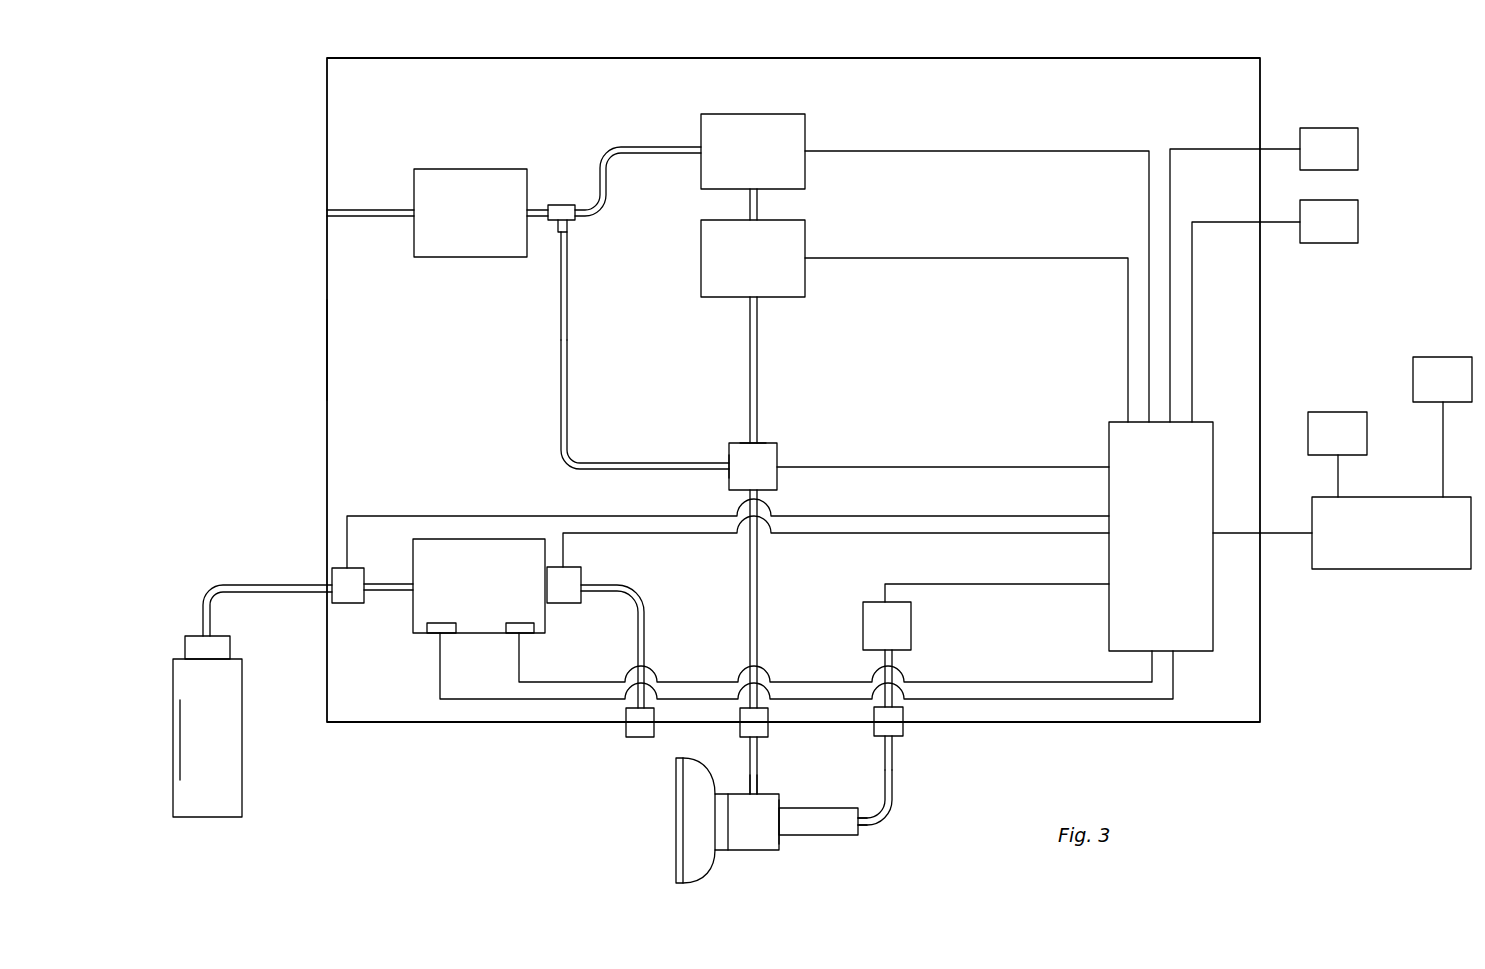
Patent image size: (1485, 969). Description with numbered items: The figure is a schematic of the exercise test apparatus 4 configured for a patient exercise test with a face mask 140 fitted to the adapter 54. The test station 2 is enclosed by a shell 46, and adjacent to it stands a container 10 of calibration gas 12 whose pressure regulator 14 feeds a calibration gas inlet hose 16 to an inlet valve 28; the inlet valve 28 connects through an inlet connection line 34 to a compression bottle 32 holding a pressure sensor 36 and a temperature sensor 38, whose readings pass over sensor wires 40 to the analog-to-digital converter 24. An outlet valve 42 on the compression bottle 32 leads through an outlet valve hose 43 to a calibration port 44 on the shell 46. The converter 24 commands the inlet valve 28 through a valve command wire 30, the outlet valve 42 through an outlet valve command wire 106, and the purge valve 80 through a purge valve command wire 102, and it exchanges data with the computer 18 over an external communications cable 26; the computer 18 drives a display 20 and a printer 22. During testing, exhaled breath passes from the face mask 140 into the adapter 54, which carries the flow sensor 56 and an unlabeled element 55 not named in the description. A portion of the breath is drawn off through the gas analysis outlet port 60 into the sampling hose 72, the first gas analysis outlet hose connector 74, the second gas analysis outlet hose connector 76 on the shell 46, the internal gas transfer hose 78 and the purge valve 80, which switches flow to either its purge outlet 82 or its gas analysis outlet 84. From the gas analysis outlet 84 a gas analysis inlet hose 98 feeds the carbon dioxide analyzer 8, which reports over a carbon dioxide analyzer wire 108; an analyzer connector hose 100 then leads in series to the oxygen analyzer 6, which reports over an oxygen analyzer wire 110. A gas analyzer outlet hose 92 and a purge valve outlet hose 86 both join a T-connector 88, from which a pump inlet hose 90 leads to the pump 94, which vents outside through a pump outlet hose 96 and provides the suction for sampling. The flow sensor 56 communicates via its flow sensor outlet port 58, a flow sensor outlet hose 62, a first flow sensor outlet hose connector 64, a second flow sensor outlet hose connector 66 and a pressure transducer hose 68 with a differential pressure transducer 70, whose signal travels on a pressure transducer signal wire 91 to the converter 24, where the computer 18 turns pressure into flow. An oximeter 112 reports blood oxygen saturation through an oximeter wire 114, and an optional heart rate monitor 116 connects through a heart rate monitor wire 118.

The test station 2 is at (493, 54).
The exercise test apparatus 4 is at (298, 121).
The oxygen analyzer 6 is at (805, 118).
The carbon dioxide analyzer 8 is at (805, 220).
The container 10 is at (242, 802).
The calibration gas 12 is at (219, 762).
The pressure regulator 14 is at (196, 636).
The calibration gas inlet hose 16 is at (278, 585).
The computer 18 is at (1405, 569).
The display 20 is at (1443, 357).
The printer 22 is at (1330, 412).
The analog-to-digital converter 24 is at (1108, 620).
The external communications cable 26 is at (1283, 533).
The inlet valve 28 is at (348, 603).
The valve command wire 30 is at (394, 515).
The compression bottle 32 is at (422, 634).
The inlet connection line 34 is at (388, 594).
The pressure sensor 36 is at (437, 622).
The temperature sensor 38 is at (521, 622).
The sensor wires 40 is at (543, 700).
The outlet valve 42 is at (568, 603).
The outlet valve hose 43 is at (645, 615).
The calibration port 44 is at (637, 728).
The shell 46 is at (327, 345).
The adapter 54 is at (748, 850).
The handpiece end 55 is at (775, 850).
The flow sensor 56 is at (822, 815).
The flow sensor outlet port 58 is at (870, 824).
The gas analysis outlet port 60 is at (752, 790).
The flow sensor outlet hose 62 is at (893, 806).
The first flow sensor outlet hose connector 64 is at (896, 740).
The second flow sensor outlet hose connector 66 is at (903, 722).
The pressure transducer hose 68 is at (893, 655).
The pressure transducer 70 is at (911, 640).
The sampling hose 72 is at (758, 760).
The first gas analysis outlet hose connector 74 is at (768, 728).
The second gas analysis outlet hose connector 76 is at (770, 712).
The internal gas transfer hose 78 is at (758, 645).
The purge valve 80 is at (780, 452).
The purge outlet 82 is at (729, 445).
The gas analysis outlet 84 is at (757, 440).
The purge valve outlet hose 86 is at (572, 446).
The T-connector 88 is at (562, 205).
The pump inlet hose 90 is at (551, 222).
The pressure transducer signal wire 91 is at (1020, 584).
The gas analyzer outlet hose 92 is at (651, 146).
The pump 94 is at (437, 256).
The pump outlet hose 96 is at (368, 208).
The gas analysis inlet hose 98 is at (758, 360).
The analyzer connector hose 100 is at (701, 205).
The purge valve command wire 102 is at (915, 466).
The outlet valve command wire 106 is at (805, 535).
The carbon dioxide analyzer wire 108 is at (1003, 257).
The oxygen analyzer wire 110 is at (1079, 150).
The oximeter 112 is at (1333, 243).
The oximeter wire 114 is at (1222, 222).
The heart rate monitor 116 is at (1358, 155).
The heart rate monitor wire 118 is at (1232, 149).
The face mask 140 is at (690, 822).